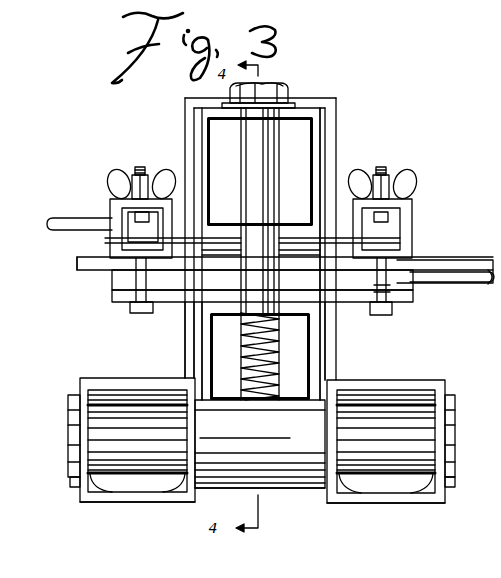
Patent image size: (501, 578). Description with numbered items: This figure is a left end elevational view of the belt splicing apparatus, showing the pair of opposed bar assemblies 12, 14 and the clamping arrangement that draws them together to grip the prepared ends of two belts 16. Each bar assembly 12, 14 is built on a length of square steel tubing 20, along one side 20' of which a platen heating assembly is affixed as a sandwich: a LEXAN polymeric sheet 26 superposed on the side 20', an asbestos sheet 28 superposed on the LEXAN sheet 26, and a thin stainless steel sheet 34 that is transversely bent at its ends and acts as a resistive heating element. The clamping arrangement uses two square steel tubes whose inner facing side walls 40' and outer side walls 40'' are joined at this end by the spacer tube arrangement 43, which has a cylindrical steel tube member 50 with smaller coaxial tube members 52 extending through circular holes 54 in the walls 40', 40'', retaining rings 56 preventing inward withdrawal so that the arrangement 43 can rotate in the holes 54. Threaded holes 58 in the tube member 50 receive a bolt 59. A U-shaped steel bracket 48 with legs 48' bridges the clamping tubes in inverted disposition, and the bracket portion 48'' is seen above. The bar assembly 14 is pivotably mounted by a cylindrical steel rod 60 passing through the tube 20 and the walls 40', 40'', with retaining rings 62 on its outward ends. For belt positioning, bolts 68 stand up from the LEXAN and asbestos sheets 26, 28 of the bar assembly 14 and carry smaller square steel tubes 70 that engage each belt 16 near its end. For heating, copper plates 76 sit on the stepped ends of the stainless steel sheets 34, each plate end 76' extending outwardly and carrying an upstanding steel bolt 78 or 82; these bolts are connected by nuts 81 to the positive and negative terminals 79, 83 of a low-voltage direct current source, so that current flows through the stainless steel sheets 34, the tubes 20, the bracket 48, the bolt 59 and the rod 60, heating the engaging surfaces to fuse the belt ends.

The bar assembly 12 is at (188, 126).
The bar assembly 14 is at (190, 352).
The belt 16 is at (82, 270).
The square steel tubing 20 is at (286, 254).
The side of tubing 20' is at (260, 259).
The LEXAN polymeric sheet 26 is at (112, 300).
The asbestos sheet 28 is at (114, 282).
The stainless steel sheet 34 is at (322, 250).
The inner facing side wall 40' is at (264, 508).
The outer side wall 40'' is at (252, 516).
The spacer tube arrangement 43 is at (278, 490).
The U-shaped steel bracket 48 is at (286, 244).
The bracket legs 48' is at (265, 254).
The cover top 48'' is at (265, 85).
The cylindrical steel tube member 50 is at (297, 439).
The smaller cylindrical tube members 52 is at (127, 448).
The circular holes 54 is at (183, 476).
The retaining rings 56 is at (72, 485).
The threaded holes 58 is at (258, 402).
The bolt 59 is at (247, 141).
The cylindrical steel rod 60 is at (133, 395).
The retaining rings 62 is at (76, 393).
The bolts 68 is at (138, 168).
The longitudinal square steel tubes 70 is at (112, 252).
The copper plate 76 is at (252, 263).
The end of copper plate 76' is at (270, 254).
The threaded steel bolt 78 is at (80, 265).
The terminal 79 is at (124, 206).
The nuts 81 is at (158, 208).
The steel bolt 82 is at (448, 284).
The terminal 83 is at (396, 300).